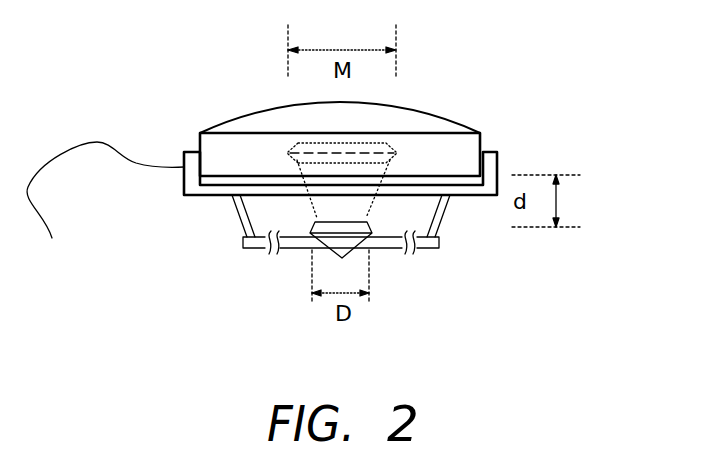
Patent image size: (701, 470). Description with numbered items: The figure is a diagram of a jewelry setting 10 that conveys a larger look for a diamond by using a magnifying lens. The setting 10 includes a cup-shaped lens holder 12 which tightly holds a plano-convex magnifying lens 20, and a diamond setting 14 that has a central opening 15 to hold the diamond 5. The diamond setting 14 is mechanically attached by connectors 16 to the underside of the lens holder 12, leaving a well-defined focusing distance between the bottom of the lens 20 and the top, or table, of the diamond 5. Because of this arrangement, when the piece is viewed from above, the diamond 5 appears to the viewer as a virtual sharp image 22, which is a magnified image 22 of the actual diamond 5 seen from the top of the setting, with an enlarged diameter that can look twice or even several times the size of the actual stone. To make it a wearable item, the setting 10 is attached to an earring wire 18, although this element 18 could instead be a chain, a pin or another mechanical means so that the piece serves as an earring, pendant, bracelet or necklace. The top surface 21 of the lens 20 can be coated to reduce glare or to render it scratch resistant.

The setting 10 is at (522, 127).
The cup-shaped lens holder 12 is at (490, 168).
The diamond setting 14 is at (393, 253).
The central opening 15 is at (327, 250).
The connectors 16 is at (242, 228).
The earring wire 18 is at (98, 145).
The plano-convex magnifying lens 20 is at (222, 140).
The top surface of the lens 21 is at (270, 116).
The virtual sharp image 22 is at (375, 158).
The diamond 5 is at (340, 240).